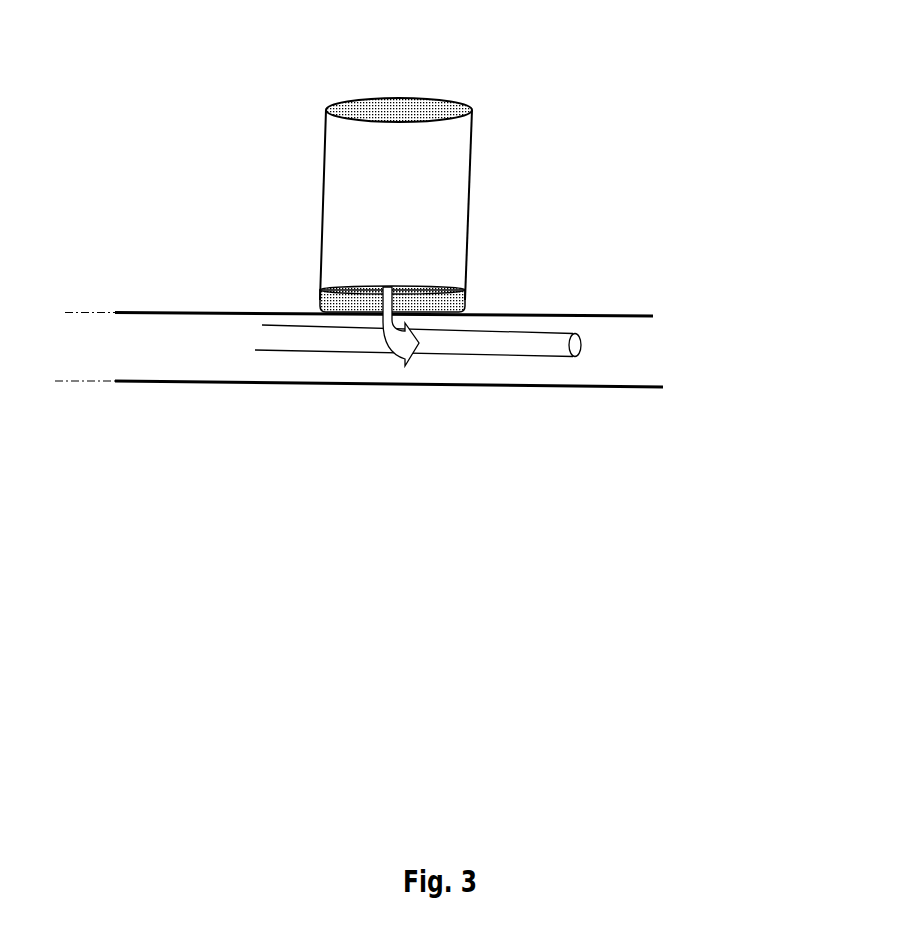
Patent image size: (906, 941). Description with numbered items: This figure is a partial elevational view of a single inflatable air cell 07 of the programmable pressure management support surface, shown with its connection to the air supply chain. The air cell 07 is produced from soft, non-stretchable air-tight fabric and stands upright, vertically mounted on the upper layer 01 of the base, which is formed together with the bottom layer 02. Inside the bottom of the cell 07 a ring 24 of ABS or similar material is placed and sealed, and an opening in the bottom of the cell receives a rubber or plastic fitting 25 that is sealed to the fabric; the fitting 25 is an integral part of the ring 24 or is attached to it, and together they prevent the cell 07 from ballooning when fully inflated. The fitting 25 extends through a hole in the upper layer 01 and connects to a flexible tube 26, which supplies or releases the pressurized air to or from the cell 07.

The upper layer 01 is at (182, 311).
The bottom layer 02 is at (172, 381).
The inflatable air cell 07 is at (410, 140).
The ring 24 is at (388, 288).
The fitting 25 is at (405, 325).
The flexible tube 26 is at (497, 333).